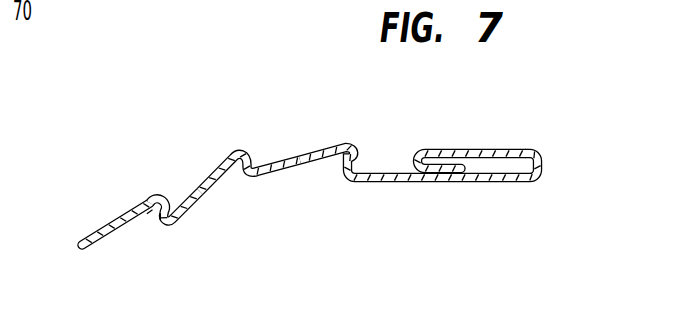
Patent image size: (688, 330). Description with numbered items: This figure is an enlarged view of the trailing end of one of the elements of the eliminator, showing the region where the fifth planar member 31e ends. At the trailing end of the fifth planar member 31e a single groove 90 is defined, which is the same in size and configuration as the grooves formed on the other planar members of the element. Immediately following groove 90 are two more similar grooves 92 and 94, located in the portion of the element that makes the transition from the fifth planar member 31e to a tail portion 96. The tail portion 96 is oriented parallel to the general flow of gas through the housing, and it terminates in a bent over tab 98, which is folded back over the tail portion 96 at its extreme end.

The fifth planar member 31e is at (94, 227).
The groove 90 is at (186, 196).
The groove 92 is at (275, 163).
The groove 94 is at (387, 173).
The tail portion 96 is at (472, 185).
The bent over tab 98 is at (475, 148).